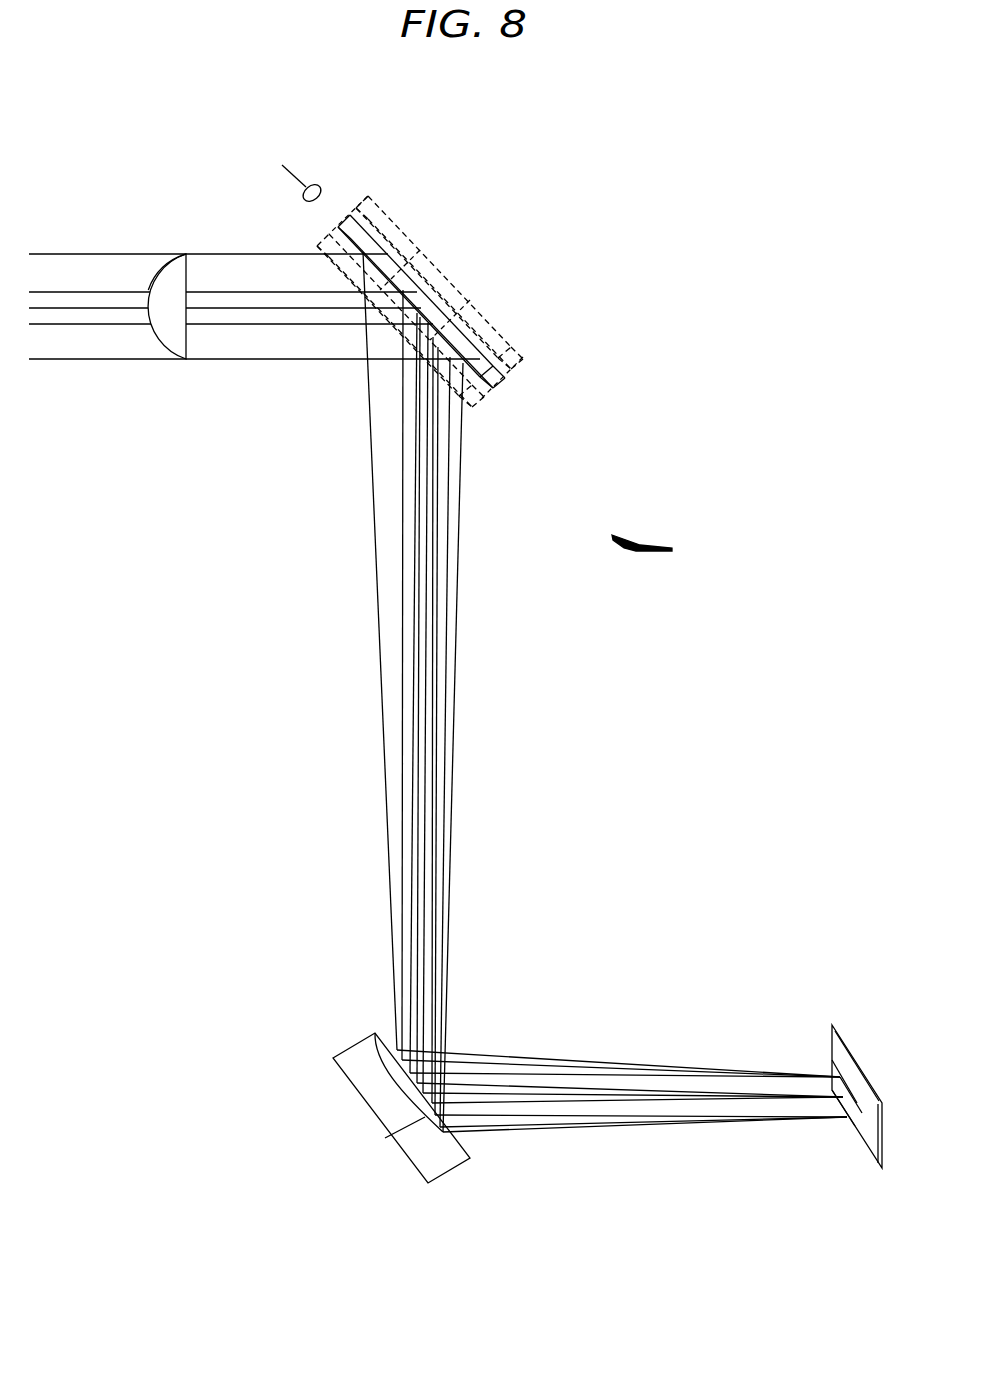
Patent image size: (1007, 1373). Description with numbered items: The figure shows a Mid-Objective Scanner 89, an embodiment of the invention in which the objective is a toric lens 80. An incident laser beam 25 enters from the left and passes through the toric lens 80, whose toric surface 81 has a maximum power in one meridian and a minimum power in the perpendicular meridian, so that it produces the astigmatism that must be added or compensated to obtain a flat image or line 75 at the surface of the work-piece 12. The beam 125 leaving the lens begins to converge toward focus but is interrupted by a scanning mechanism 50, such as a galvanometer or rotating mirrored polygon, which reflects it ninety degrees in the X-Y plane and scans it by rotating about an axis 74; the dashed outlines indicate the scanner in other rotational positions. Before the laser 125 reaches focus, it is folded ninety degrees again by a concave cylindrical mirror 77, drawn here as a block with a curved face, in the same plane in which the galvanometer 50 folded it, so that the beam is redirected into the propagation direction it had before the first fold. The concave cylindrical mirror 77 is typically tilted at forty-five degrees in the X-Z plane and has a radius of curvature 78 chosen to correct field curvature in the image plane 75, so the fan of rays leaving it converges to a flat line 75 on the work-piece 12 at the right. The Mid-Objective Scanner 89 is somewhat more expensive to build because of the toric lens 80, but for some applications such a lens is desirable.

The work-piece 12 is at (830, 1050).
The incident laser beam 25 is at (72, 360).
The scanning mechanism 50 is at (500, 384).
The axis 74 is at (305, 187).
The image plane 75 is at (866, 1125).
The concave cylindrical mirror 77 is at (460, 1165).
The radius of curvature 78 is at (392, 1050).
The toric lens 80 is at (173, 337).
The toric surface 81 is at (158, 272).
The Mid-Objective Scanner 89 is at (702, 561).
The laser beam 125 is at (230, 359).